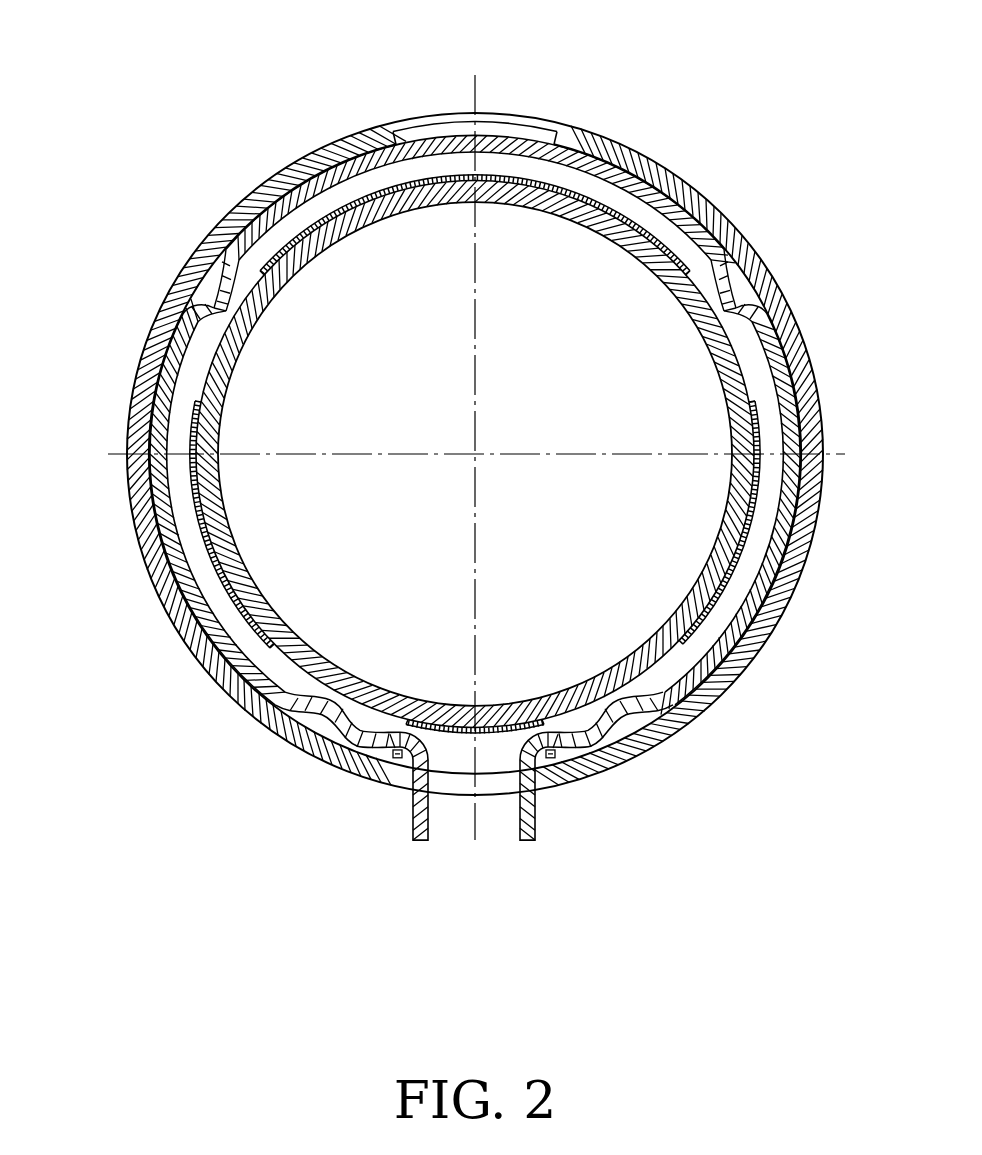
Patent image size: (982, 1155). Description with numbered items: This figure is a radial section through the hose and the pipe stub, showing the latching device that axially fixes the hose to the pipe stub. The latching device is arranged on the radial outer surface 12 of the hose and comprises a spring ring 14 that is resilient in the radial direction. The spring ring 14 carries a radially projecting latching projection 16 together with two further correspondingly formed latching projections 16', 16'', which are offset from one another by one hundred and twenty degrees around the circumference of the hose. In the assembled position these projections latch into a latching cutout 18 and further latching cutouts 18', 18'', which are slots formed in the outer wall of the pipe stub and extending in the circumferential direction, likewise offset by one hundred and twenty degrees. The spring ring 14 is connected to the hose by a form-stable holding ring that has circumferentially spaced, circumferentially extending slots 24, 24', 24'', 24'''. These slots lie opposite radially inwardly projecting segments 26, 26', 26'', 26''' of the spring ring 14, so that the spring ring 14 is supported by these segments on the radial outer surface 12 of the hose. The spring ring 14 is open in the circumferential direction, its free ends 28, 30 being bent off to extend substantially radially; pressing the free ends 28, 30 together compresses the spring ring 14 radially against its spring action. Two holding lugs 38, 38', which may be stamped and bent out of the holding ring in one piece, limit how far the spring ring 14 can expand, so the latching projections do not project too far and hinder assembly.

The radial outer surface 12 is at (207, 368).
The spring ring 14 is at (655, 190).
The latching projection 16 is at (480, 135).
The latching projection 16' is at (758, 514).
The latching projection 16'' is at (199, 510).
The latching cutout 18 is at (475, 75).
The latching cutout 18' is at (716, 456).
The latching cutout 18'' is at (234, 456).
The slot 24 is at (762, 229).
The slot 24' is at (663, 738).
The slot 24'' is at (337, 777).
The slot 24''' is at (201, 225).
The radially inwardly projecting segment 26 is at (798, 279).
The radially inwardly projecting segment 26' is at (657, 776).
The radially inwardly projecting segment 26'' is at (276, 758).
The radially inwardly projecting segment 26''' is at (147, 283).
The free end 28 is at (420, 850).
The free end 30 is at (527, 850).
The holding lug 38 is at (385, 825).
The holding lug 38' is at (569, 825).